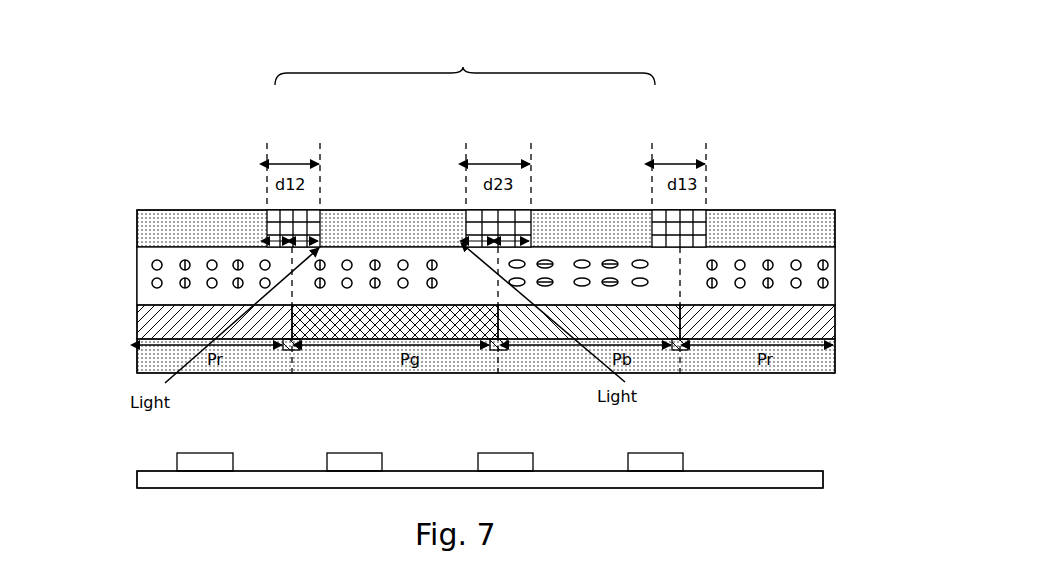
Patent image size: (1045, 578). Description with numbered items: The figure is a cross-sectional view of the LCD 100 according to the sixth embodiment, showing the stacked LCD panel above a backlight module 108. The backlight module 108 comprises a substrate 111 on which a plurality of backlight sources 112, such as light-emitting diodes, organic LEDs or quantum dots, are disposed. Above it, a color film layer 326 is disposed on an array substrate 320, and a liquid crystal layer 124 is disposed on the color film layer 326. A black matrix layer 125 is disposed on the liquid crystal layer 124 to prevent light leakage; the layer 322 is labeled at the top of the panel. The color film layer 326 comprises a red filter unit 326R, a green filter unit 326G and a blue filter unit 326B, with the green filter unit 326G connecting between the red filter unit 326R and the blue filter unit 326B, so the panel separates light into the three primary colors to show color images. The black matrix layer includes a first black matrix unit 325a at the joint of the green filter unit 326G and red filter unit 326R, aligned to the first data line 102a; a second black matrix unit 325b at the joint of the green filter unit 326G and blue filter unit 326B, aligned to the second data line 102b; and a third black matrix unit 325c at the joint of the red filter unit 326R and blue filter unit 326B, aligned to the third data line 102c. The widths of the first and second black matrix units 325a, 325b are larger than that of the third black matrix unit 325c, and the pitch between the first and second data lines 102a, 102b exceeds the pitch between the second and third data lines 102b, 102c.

The LCD 100 is at (478, 36).
The black matrix layer 125 is at (465, 64).
The black matrix / top layer 322 is at (219, 197).
The first black matrix unit 325a is at (270, 208).
The second black matrix unit 325b is at (467, 208).
The third black matrix unit 325c is at (668, 208).
The array substrate 320 is at (128, 363).
The liquid crystal layer 124 is at (368, 292).
The red filter unit 326R is at (263, 312).
The green filter unit 326G is at (407, 327).
The blue filter unit 326B is at (592, 312).
The color film layer 326 is at (750, 313).
The first data line 102a is at (290, 350).
The second data line 102b is at (495, 350).
The third data line 102c is at (676, 350).
The backlight module 108 is at (832, 477).
The substrate 111 is at (293, 478).
The backlight sources 112 is at (207, 465).